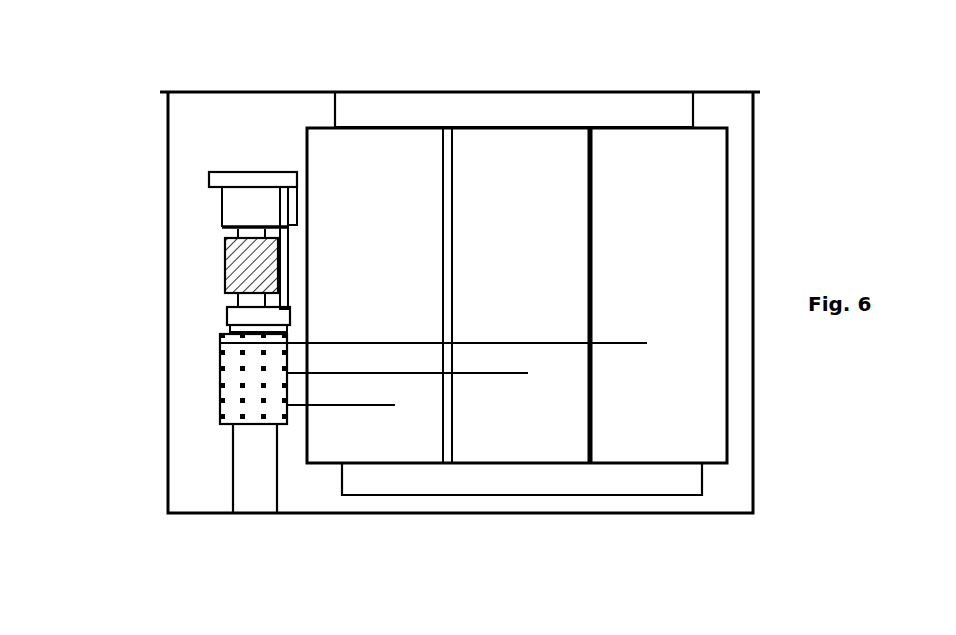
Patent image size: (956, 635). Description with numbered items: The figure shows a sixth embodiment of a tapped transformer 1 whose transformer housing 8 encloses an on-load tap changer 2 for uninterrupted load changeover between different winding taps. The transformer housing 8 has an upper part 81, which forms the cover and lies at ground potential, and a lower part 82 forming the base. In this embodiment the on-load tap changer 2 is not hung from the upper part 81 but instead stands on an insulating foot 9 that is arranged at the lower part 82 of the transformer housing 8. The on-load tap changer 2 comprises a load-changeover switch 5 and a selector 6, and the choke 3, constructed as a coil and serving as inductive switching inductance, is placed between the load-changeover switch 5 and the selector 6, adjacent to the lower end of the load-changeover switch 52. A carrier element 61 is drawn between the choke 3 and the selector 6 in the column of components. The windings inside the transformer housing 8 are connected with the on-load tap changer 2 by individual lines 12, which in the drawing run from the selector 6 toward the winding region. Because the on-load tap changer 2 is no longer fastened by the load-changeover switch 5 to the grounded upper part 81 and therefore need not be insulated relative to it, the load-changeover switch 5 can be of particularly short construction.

The tapped transformer 1 is at (800, 200).
The on-load tap changer 2 is at (208, 155).
The choke 3 is at (232, 270).
The load-changeover switch 5 is at (238, 203).
The load-changeover switch 52 is at (247, 220).
The selector 6 is at (232, 365).
The carrier plate 61 is at (247, 308).
The transformer housing 8 is at (488, 92).
The upper part 81 is at (390, 92).
The lower part 82 is at (325, 513).
The insulating foot 9 is at (257, 490).
The individual lines 12 is at (622, 343).